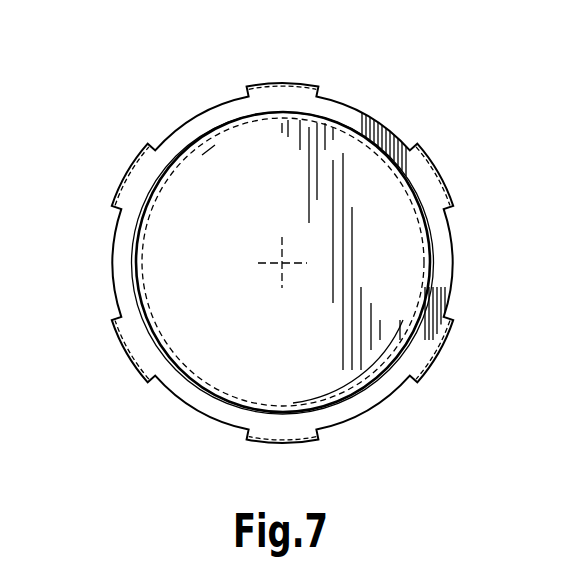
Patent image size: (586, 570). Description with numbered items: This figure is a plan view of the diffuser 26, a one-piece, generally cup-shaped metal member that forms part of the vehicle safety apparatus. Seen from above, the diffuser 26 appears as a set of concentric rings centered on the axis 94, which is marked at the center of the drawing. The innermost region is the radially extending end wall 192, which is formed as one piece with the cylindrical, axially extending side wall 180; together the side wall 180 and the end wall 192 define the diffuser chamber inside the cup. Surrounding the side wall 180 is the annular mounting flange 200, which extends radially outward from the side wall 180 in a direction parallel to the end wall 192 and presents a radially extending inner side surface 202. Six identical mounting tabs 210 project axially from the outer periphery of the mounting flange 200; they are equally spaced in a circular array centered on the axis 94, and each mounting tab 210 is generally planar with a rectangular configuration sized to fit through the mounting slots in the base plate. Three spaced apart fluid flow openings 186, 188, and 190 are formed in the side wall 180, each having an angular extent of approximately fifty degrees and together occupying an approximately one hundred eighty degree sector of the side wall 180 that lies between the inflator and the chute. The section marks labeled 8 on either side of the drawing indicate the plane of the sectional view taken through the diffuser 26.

The mounting flange 200 is at (200, 107).
The mounting tabs 210 is at (270, 83).
The inner side surface 202 is at (327, 110).
The end wall 192 is at (388, 252).
The fluid flow opening 186 is at (420, 328).
The fluid flow opening 188 is at (288, 414).
The side wall 180 is at (132, 243).
The fluid flow opening 190 is at (160, 353).
The axis 94 is at (283, 267).
The diffuser 26 is at (158, 472).
The section line 8- 8 is at (105, 463).